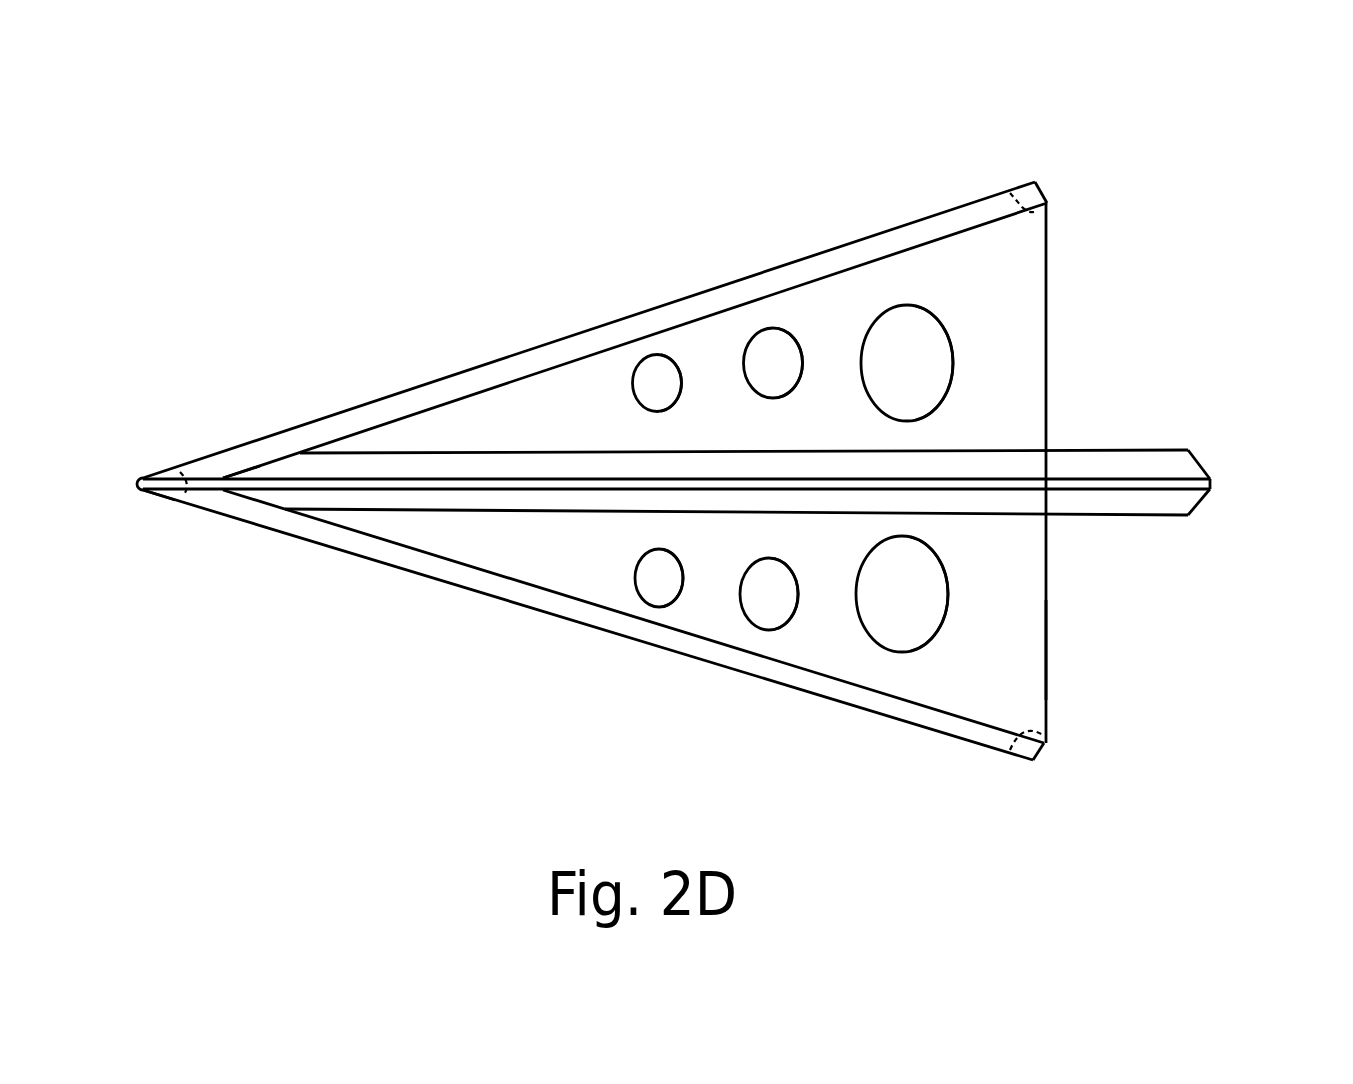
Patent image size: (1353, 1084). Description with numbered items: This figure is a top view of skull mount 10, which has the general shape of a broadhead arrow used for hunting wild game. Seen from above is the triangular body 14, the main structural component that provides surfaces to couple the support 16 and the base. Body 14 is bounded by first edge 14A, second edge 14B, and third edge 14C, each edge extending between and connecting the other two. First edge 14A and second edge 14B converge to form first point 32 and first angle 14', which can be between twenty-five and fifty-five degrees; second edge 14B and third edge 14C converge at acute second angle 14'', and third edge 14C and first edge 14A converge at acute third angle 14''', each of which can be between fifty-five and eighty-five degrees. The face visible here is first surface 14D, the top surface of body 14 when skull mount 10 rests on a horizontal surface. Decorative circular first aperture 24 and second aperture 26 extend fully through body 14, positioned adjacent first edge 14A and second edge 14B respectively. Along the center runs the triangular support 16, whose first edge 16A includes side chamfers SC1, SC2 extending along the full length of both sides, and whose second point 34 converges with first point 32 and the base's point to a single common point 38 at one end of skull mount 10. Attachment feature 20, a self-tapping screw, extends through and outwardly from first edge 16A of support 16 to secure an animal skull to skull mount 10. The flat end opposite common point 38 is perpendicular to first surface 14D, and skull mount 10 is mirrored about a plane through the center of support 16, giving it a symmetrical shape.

The skull mount 10 is at (701, 466).
The body 14 is at (626, 525).
The first edge 14A is at (498, 600).
The second edge 14B is at (403, 392).
The third edge 14C is at (1045, 577).
The first surface 14D is at (1012, 670).
The first angle 14' is at (212, 525).
The second angle 14'' is at (1063, 246).
The third angle 14''' is at (1055, 786).
The support 16 is at (340, 506).
The first edge 16A is at (475, 492).
The attachment feature 20 is at (1147, 468).
The first aperture 24 is at (773, 592).
The second aperture 26 is at (765, 343).
The first point 32 is at (138, 470).
The second point 34 is at (218, 475).
The common point 38 is at (140, 495).
The side chamfer SC1 is at (1195, 508).
The side chamfer SC2 is at (1195, 460).